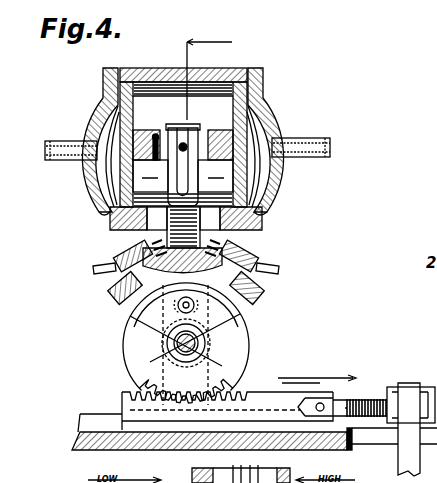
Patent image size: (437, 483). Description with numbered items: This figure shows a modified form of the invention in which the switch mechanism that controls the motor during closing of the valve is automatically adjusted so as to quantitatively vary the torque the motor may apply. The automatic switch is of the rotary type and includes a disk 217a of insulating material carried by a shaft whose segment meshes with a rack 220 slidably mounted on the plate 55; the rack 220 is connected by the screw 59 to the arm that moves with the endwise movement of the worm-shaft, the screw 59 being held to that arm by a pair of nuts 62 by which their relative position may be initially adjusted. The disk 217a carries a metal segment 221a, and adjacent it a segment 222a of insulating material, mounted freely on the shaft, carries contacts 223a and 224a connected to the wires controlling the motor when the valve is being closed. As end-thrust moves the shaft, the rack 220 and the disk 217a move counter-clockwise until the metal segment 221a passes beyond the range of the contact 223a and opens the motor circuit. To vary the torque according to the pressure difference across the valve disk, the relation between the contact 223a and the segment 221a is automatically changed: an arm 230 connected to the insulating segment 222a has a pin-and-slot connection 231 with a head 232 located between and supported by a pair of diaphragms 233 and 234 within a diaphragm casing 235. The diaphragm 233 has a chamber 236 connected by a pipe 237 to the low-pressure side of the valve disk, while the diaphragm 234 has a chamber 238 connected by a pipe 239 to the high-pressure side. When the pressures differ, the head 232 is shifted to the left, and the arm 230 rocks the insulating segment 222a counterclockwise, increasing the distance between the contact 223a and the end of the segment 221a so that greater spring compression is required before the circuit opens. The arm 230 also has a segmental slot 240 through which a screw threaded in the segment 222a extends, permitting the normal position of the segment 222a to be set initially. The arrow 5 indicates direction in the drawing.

The direction arrow 5 is at (216, 76).
The diaphragm casing 235 is at (167, 59).
The diaphragm 233 is at (105, 98).
The chamber 236 is at (97, 120).
The pipe 237 is at (66, 160).
The diaphragm 234 is at (265, 104).
The pipe 239 is at (318, 157).
The chamber 238 is at (263, 186).
The head 232 is at (157, 132).
The pin-and-slot connection 231 is at (188, 144).
The arm 230 is at (193, 199).
The contact 224a is at (120, 255).
The metal segment 221a is at (125, 291).
The contact 223a is at (243, 251).
The insulating segment 222a is at (257, 290).
The disk 217a is at (124, 343).
The segmental slot 240 is at (193, 305).
The rack 220 is at (120, 396).
The plate 55 is at (73, 439).
The screw rod 59 is at (360, 394).
The nuts 62 is at (432, 389).